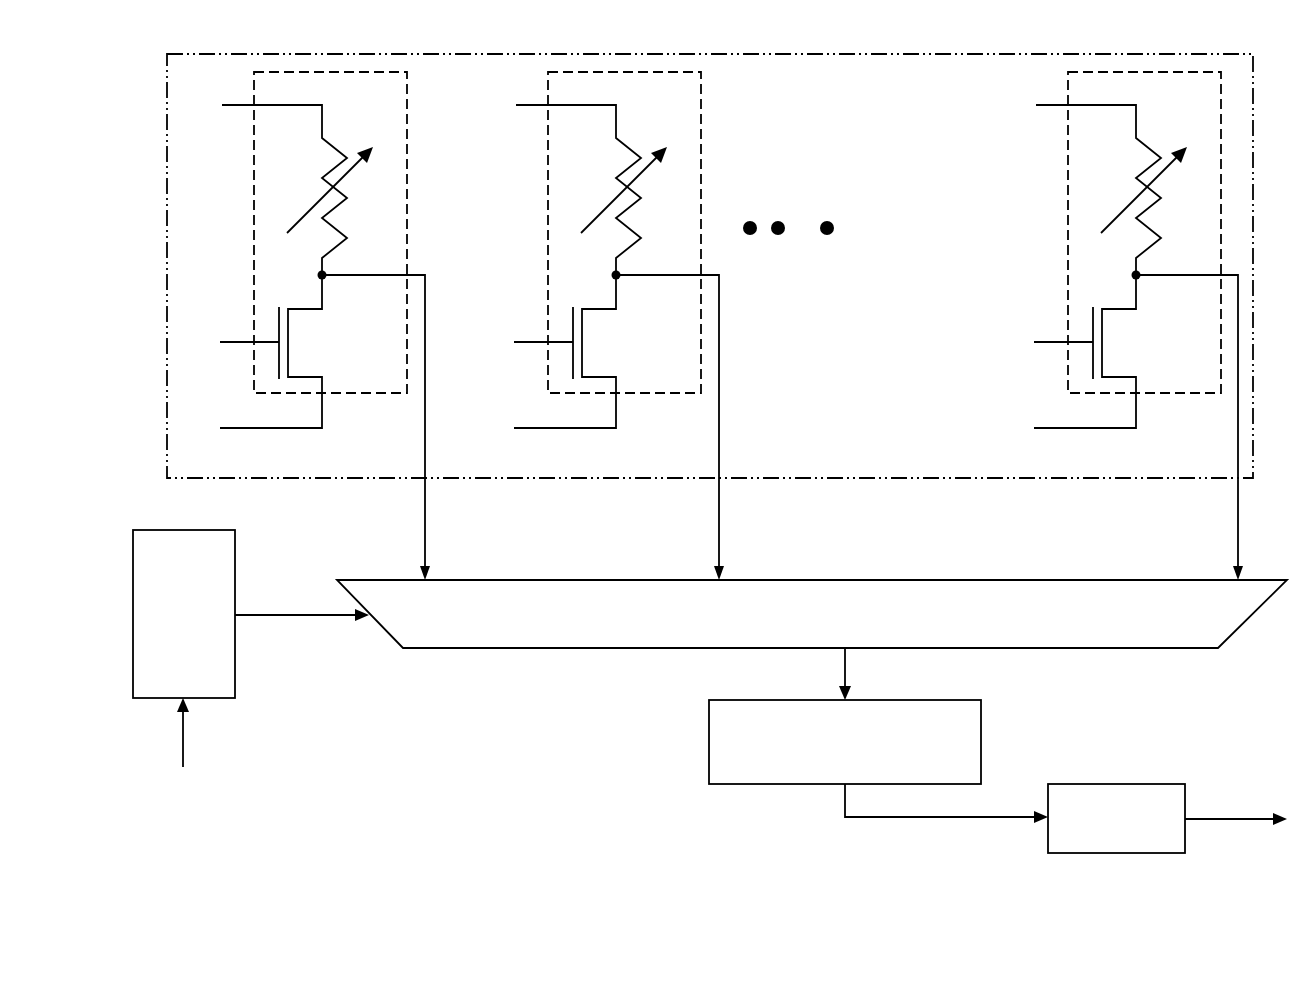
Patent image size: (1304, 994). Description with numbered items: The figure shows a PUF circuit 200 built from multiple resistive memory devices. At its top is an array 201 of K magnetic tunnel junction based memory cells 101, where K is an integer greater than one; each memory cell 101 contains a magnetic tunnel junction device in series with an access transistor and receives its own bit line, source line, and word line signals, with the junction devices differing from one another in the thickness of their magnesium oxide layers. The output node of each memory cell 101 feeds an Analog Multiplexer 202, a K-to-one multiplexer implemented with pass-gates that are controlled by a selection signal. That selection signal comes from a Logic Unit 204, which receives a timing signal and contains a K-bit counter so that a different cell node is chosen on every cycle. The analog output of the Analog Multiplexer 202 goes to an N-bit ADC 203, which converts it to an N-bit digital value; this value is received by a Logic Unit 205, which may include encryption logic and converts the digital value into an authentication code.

The PUF circuit 200 is at (726, 31).
The array of MTJ based memory cells 201 is at (212, 470).
The MTJ based memory cell 101 is at (709, 326).
The Analog Multiplexer 202 is at (863, 625).
The N-bit ADC 203 is at (863, 768).
The Logic Unit 204 is at (204, 654).
The Logic Unit 205 is at (1135, 842).